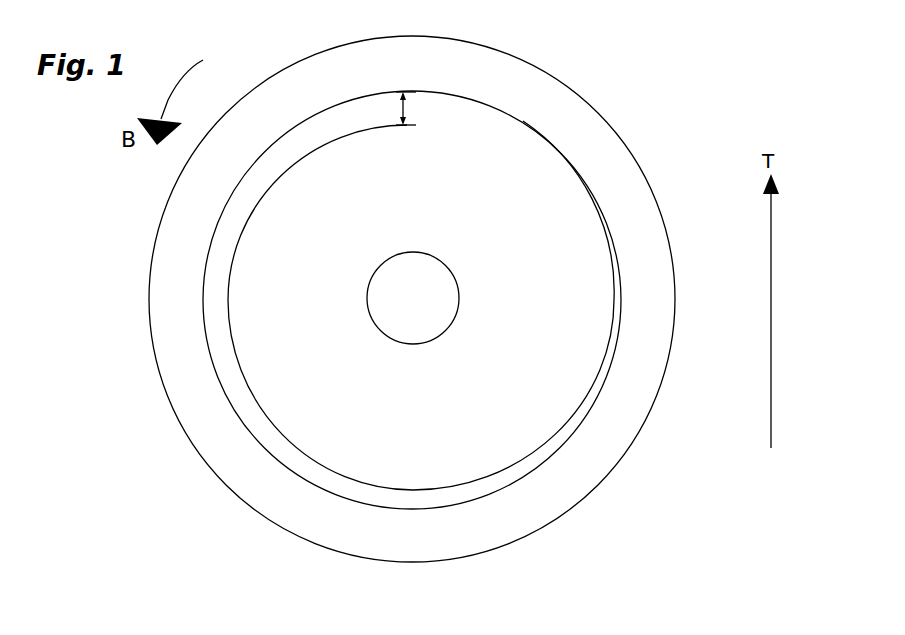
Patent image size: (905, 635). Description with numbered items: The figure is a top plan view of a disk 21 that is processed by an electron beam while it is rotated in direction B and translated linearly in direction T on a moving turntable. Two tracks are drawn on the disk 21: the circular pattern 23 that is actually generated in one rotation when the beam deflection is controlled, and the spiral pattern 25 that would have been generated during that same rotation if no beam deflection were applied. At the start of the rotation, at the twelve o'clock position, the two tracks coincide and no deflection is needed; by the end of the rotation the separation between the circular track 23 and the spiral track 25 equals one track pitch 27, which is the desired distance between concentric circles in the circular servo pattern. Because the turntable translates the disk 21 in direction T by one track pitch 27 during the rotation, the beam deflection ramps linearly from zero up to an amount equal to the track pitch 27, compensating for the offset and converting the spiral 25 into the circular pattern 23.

The disk 21 is at (588, 98).
The circular pattern 23 is at (208, 253).
The spiral pattern 25 is at (248, 383).
The track pitch 27 is at (407, 112).